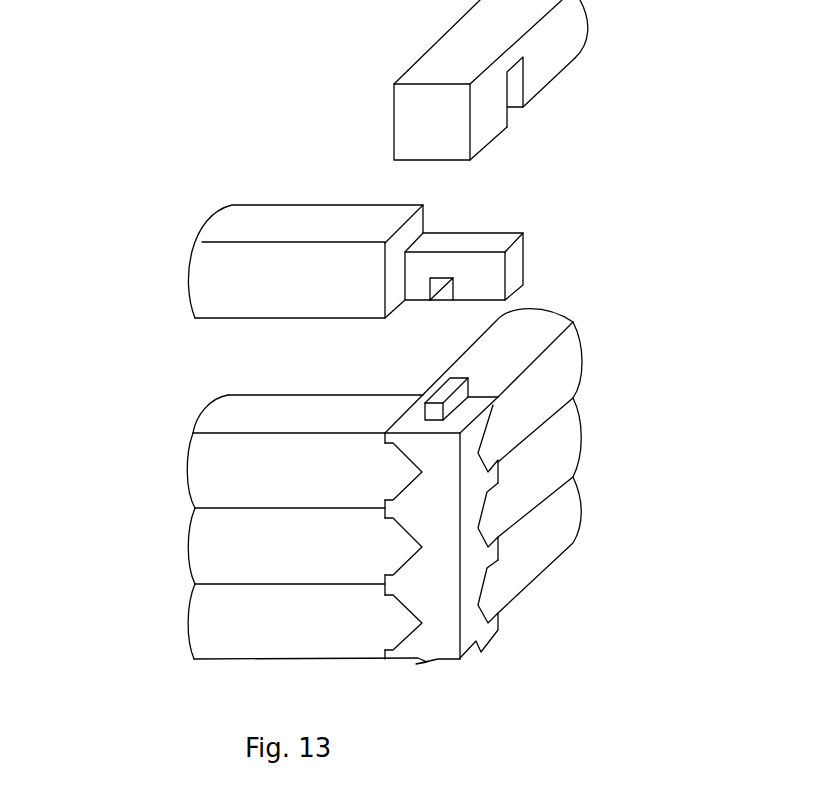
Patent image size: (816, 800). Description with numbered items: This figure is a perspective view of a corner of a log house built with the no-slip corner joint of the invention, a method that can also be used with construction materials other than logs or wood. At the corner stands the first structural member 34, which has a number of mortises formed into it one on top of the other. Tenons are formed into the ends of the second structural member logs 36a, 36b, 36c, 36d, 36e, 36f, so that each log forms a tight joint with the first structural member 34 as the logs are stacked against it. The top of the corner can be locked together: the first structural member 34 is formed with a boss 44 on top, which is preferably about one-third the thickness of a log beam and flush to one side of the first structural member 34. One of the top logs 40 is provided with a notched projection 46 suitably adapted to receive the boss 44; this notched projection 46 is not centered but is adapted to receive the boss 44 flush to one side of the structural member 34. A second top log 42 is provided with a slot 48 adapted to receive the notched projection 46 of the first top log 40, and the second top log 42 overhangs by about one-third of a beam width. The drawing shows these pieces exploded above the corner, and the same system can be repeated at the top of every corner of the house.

The first structural member 34 is at (438, 645).
The second structural member log 36a is at (568, 350).
The second structural member log 36b is at (568, 425).
The second structural member log 36c is at (568, 508).
The second structural member log 36d is at (212, 458).
The second structural member log 36e is at (220, 543).
The second structural member log 36f is at (210, 615).
The top log 40 is at (213, 307).
The second top log 42 is at (573, 52).
The boss 44 is at (445, 390).
The notched projection 46 is at (473, 273).
The slot 48 is at (513, 100).